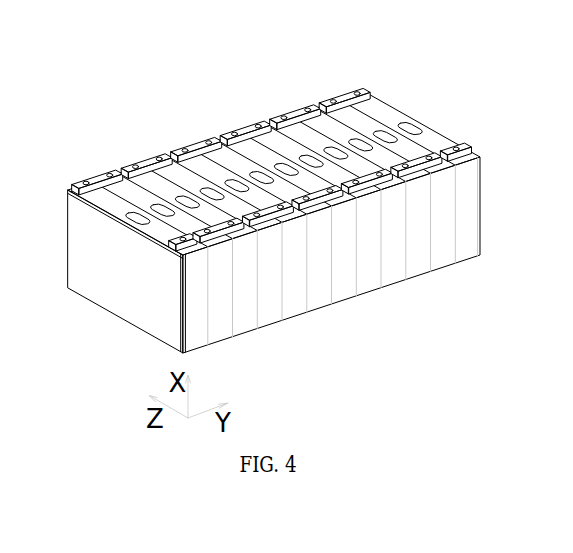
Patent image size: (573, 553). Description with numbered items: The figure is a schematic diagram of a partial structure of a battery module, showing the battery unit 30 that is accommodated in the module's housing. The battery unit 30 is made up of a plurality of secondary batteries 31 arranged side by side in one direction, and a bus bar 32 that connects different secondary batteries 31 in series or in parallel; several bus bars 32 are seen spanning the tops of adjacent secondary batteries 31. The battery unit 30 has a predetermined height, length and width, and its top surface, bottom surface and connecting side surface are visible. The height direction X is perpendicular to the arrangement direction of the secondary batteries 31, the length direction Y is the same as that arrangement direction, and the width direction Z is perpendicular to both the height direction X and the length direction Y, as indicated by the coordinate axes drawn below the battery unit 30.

The battery unit 30 is at (360, 57).
The secondary battery 31 is at (122, 285).
The bus bar 32 is at (98, 180).